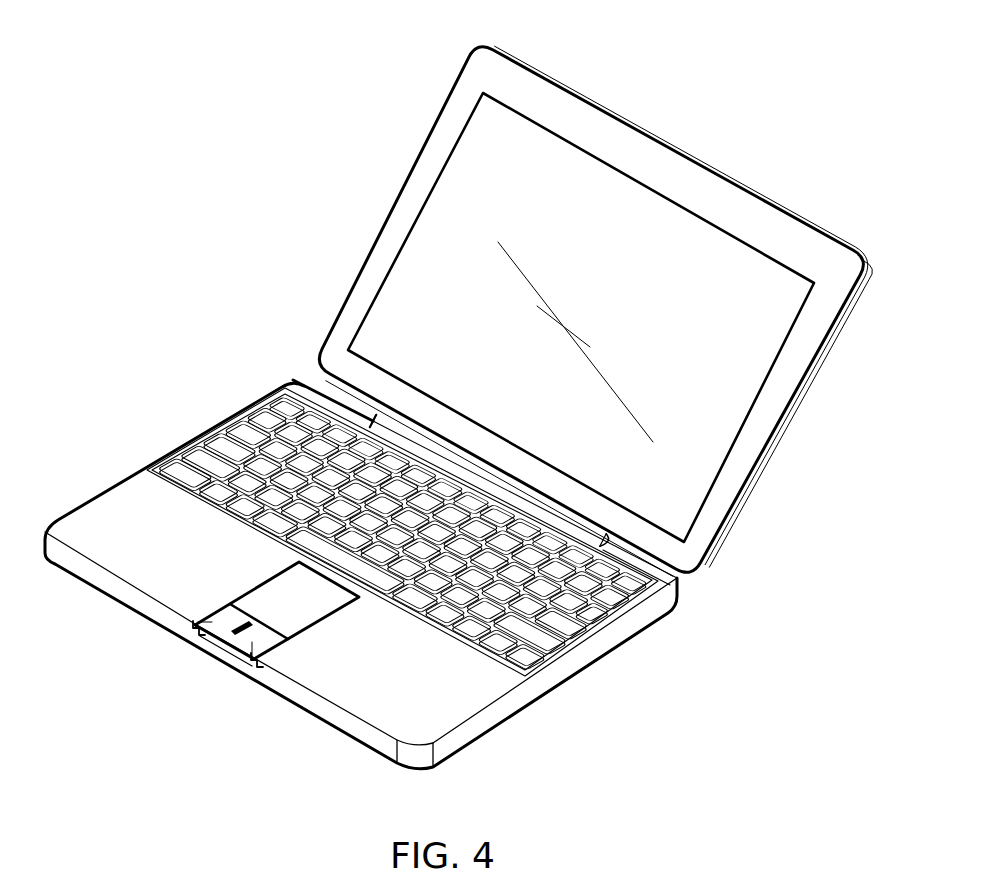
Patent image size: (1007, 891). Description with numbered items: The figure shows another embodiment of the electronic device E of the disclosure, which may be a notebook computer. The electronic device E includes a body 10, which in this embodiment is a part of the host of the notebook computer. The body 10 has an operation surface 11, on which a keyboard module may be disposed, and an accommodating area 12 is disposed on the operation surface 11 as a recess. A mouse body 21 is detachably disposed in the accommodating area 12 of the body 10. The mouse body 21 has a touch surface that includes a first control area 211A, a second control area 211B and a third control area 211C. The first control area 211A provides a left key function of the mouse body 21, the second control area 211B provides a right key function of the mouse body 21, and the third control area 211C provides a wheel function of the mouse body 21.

The electronic device E is at (325, 243).
The body 10 is at (356, 578).
The operation surface 11 is at (120, 555).
The accommodating area 12 is at (243, 600).
The mouse body 21 is at (221, 690).
The first control area 211A is at (250, 664).
The second control area 211B is at (193, 622).
The third control area 211C is at (252, 622).